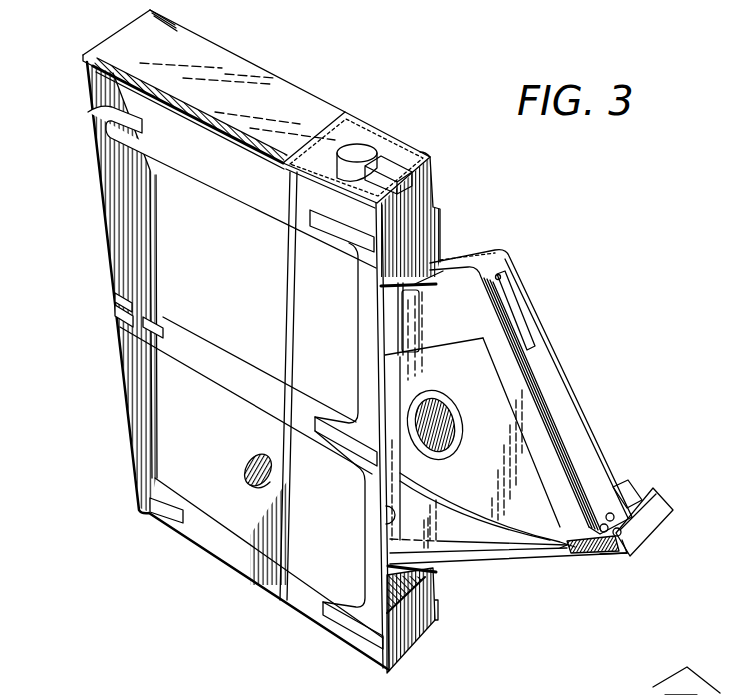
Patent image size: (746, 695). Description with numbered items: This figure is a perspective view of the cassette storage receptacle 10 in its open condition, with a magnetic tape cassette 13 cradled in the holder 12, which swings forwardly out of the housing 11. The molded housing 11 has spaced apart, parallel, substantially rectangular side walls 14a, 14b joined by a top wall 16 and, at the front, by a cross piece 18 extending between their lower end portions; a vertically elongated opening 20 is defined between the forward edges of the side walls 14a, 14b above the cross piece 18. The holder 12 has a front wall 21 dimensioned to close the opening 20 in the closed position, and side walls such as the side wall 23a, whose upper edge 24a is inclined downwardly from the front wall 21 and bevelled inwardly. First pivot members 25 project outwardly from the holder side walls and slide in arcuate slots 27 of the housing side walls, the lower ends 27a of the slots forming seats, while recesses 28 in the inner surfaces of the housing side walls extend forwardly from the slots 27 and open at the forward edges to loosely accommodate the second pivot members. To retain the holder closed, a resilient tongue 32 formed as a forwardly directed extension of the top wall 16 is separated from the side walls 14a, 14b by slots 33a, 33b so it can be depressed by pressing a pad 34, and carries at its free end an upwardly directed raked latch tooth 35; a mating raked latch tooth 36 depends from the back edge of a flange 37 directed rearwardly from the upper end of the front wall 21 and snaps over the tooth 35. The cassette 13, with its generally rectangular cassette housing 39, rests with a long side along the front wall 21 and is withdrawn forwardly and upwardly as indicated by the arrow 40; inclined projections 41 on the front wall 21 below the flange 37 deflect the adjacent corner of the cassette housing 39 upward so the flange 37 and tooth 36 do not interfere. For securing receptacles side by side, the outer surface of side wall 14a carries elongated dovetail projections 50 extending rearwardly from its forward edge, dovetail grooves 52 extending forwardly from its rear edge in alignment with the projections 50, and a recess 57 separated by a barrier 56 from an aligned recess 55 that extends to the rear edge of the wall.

The cassette storage receptacle 10 is at (425, 100).
The housing 11 is at (119, 394).
The holder 12 is at (512, 571).
The magnetic tape cassette 13 is at (568, 366).
The side wall 14a is at (133, 465).
The side wall 14b is at (433, 230).
The top wall 16 is at (228, 64).
The cross piece 18 is at (397, 647).
The opening 20 is at (413, 218).
The front wall 21 is at (580, 558).
The side wall 23a is at (460, 543).
The upper edge 24a is at (463, 510).
The first pivot members 25 is at (263, 449).
The arcuate slots 27 is at (257, 487).
The lower ends of slots 27a is at (246, 476).
The recesses 28 is at (378, 528).
The resilient tongue 32 is at (318, 150).
The slot 33a is at (288, 184).
The slot 33b is at (353, 128).
The pad 34 is at (388, 143).
The latch element 35 is at (431, 156).
The latch element 36 is at (623, 556).
The flange 37 is at (653, 509).
The cassette housing 39 is at (580, 433).
The arrow 40 is at (640, 372).
The inclined projections 41 is at (612, 489).
The elongated projections 50 is at (325, 226).
The grooves 52 is at (98, 108).
The recess 55 is at (117, 304).
The barrier 56 is at (127, 296).
The recess 57 is at (160, 322).